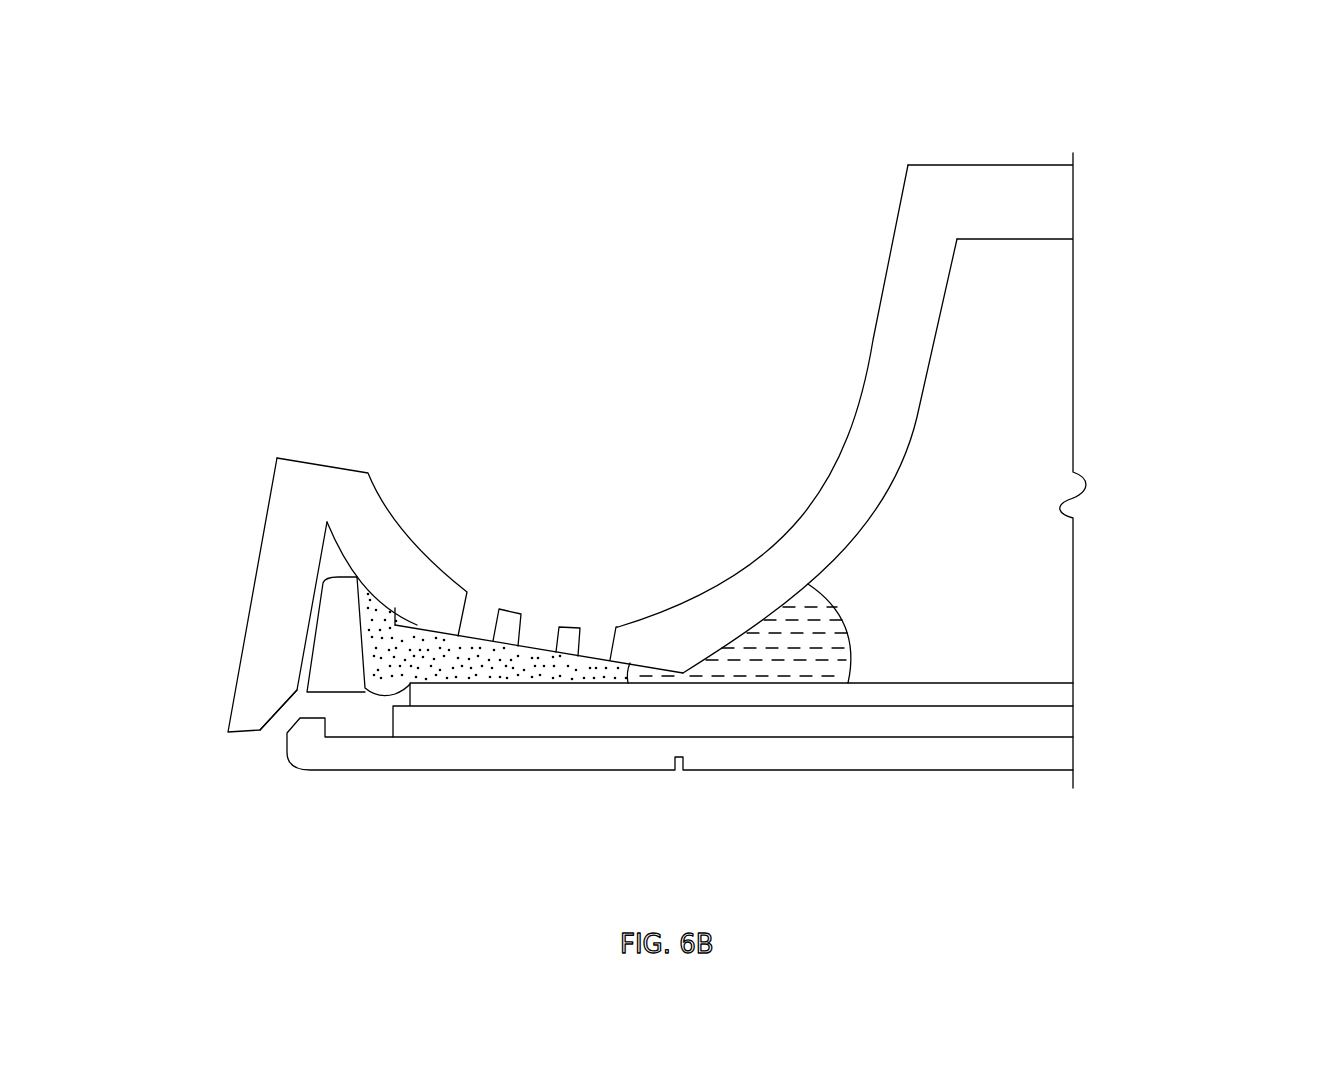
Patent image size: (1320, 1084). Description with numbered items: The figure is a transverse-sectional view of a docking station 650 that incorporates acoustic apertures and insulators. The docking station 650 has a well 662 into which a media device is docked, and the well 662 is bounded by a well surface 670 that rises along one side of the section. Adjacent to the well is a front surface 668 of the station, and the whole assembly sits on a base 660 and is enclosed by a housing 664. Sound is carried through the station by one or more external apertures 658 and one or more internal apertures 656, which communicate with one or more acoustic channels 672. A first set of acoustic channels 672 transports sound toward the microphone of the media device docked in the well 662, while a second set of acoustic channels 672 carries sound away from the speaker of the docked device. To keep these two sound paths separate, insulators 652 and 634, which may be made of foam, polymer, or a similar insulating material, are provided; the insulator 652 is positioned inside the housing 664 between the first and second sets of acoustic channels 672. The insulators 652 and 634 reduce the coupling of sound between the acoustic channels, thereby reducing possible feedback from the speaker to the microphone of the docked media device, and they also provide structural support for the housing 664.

The docking station 650 is at (1195, 103).
The well 662 is at (658, 362).
The well surface 670 is at (852, 403).
The housing 664 is at (1045, 373).
The front surface 668 is at (252, 578).
The internal apertures 656 is at (478, 610).
The external apertures 658 is at (282, 723).
The acoustic channels 672 is at (356, 713).
The insulator 652 is at (512, 678).
The base 660 is at (650, 764).
The insulator 634 is at (790, 677).